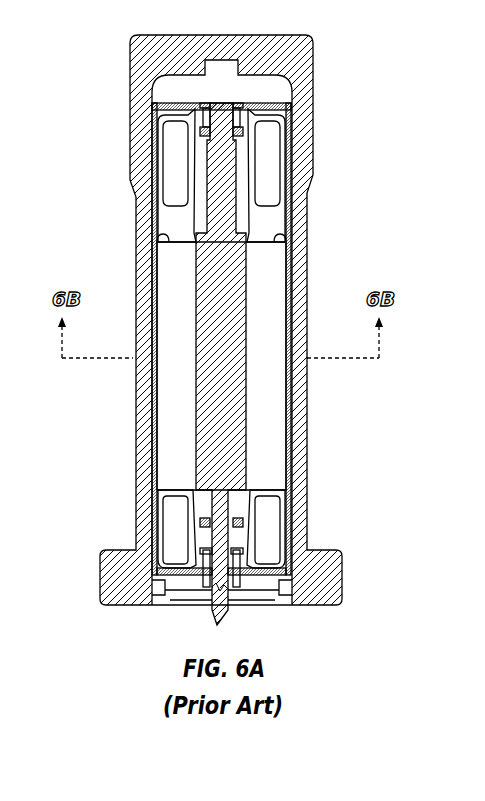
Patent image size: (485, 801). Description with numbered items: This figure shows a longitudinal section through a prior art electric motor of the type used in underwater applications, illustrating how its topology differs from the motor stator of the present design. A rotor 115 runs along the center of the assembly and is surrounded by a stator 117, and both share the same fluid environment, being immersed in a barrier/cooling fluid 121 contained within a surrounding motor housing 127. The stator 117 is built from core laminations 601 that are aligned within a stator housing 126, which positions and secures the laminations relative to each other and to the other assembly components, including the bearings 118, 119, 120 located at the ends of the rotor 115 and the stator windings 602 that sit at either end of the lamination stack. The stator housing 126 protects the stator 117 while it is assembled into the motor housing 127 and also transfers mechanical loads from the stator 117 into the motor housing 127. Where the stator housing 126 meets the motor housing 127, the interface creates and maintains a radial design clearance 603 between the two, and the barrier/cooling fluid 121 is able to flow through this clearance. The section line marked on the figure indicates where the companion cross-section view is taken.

The rotor 115 is at (202, 305).
The stator 117 is at (172, 335).
The bearing 118 is at (202, 523).
The bearing 119 is at (203, 128).
The bearing 120 is at (204, 113).
The barrier/cooling fluid 121 is at (190, 140).
The stator housing 126 is at (156, 210).
The motor housing 127 is at (144, 50).
The core laminations 601 is at (162, 268).
The stator windings 602 is at (167, 168).
The radial design clearance 603 is at (150, 185).